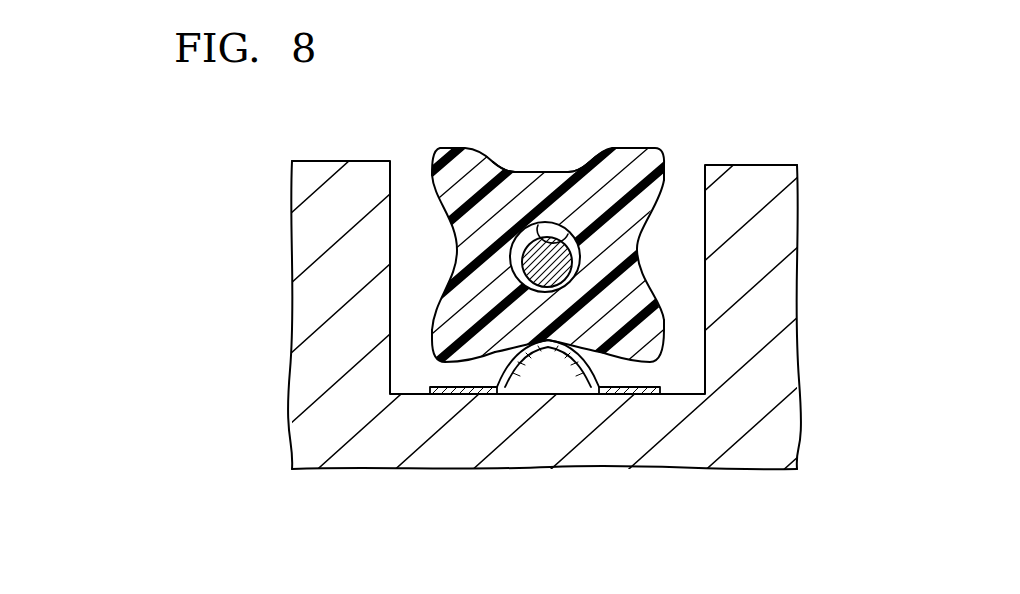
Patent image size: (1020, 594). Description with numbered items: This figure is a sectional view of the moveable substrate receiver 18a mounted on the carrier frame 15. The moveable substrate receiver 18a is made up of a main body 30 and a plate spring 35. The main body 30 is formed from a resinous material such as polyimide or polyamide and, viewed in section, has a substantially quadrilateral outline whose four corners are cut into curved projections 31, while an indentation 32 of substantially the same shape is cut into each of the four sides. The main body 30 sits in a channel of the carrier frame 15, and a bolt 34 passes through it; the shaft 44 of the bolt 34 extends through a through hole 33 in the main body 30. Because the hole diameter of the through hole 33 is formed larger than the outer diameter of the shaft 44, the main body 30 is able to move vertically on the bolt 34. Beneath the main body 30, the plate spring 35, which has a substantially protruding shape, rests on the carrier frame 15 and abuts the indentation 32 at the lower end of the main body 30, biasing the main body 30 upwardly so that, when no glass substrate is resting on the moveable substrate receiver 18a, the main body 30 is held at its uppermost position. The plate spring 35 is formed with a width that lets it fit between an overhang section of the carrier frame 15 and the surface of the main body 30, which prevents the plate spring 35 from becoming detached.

The carrier frame 15 is at (780, 311).
The moveable substrate receiver 18a is at (634, 142).
The main body 30 is at (512, 270).
The projection 31 is at (445, 150).
The indentation 32 is at (527, 165).
The through hole 33 is at (553, 222).
The bolt 34 is at (512, 270).
The plate spring 35 is at (455, 394).
The shaft 44 is at (512, 270).